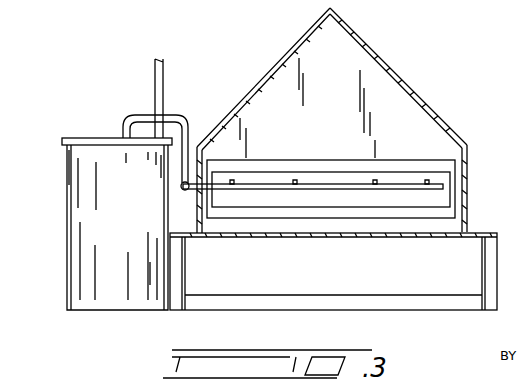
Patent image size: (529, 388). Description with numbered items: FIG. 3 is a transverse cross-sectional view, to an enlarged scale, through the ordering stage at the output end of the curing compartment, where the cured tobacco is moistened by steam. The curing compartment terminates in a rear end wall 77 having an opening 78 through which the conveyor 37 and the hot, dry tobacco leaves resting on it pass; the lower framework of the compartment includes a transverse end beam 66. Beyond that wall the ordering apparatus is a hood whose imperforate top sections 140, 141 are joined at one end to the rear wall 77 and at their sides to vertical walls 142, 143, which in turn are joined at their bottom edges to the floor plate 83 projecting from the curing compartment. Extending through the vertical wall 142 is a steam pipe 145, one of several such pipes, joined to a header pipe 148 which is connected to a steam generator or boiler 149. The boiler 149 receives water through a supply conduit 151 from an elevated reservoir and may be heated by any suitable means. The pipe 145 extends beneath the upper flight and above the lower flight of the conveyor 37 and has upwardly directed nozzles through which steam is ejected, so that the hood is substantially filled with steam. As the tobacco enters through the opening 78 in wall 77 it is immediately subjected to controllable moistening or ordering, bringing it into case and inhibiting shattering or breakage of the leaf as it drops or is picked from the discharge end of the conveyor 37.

The top section 140 is at (296, 44).
The top section 141 is at (385, 62).
The end wall 77 is at (341, 75).
The opening 78 is at (270, 165).
The conveyor 37 is at (317, 173).
The pipe 145 is at (398, 186).
The vertical wall 143 is at (468, 172).
The supply conduit 151 is at (154, 92).
The header pipe 148 is at (181, 189).
The vertical wall 142 is at (196, 203).
The floor plate 83 is at (313, 237).
The transverse end beam 66 is at (345, 304).
The boiler 149 is at (118, 303).